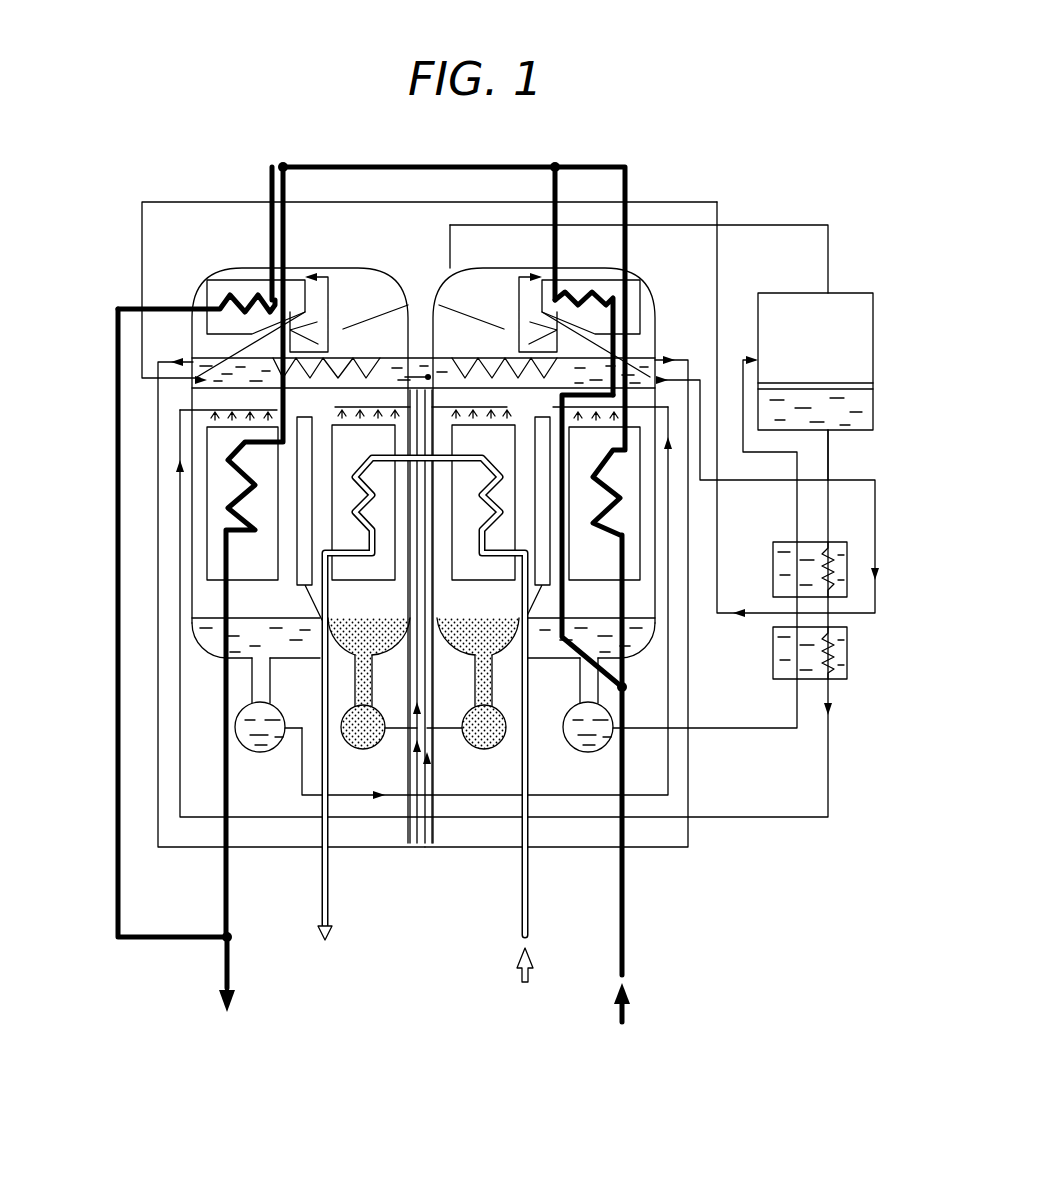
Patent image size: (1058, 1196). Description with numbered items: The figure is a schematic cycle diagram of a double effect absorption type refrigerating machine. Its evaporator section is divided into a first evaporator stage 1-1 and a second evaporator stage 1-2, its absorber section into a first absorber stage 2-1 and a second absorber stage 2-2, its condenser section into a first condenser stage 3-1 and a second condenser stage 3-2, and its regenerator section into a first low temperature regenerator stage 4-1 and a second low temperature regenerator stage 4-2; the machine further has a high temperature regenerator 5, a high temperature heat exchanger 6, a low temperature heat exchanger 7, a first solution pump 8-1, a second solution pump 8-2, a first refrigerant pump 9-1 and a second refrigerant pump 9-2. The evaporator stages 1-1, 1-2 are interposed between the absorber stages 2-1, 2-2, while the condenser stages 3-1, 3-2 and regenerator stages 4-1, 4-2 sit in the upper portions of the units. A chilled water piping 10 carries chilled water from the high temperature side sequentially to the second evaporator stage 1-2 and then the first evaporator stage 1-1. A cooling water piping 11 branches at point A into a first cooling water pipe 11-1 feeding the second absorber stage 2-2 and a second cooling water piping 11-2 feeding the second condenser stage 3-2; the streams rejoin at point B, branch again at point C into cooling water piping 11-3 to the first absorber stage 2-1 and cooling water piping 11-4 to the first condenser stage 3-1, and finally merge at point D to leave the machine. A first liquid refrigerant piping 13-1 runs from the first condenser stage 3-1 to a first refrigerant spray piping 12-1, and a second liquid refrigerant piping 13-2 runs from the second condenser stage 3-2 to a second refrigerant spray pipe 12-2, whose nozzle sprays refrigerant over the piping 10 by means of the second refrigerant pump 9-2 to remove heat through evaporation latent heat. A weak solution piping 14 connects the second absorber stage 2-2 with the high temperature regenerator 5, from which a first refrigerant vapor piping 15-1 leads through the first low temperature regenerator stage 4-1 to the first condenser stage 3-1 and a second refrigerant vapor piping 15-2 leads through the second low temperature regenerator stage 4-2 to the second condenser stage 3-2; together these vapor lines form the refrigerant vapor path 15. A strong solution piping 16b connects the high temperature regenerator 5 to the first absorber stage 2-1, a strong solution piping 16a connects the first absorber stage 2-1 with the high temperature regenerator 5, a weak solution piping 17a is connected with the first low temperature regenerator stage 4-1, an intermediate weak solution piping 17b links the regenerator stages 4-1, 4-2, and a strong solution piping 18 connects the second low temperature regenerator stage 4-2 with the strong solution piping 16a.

The first evaporator stage 1-1 is at (378, 610).
The second evaporator stage 1-2 is at (472, 610).
The first absorber stage 2-1 is at (200, 603).
The second absorber stage 2-2 is at (642, 602).
The first condenser stage 3-1 is at (222, 292).
The second condenser stage 3-2 is at (592, 290).
The first low temperature regenerator stage 4-1 is at (325, 292).
The second low temperature regenerator stage 4-2 is at (505, 292).
The high temperature regenerator 5 is at (860, 293).
The high temperature heat exchanger 6 is at (848, 556).
The low temperature heat exchanger 7 is at (848, 643).
The first solution pump 8-1 is at (258, 752).
The second solution pump 8-2 is at (580, 752).
The first refrigerant pump 9-1 is at (362, 750).
The second refrigerant pump 9-2 is at (480, 750).
The chilled water piping 10 is at (529, 905).
The cooling water piping 11 is at (435, 167).
The first cooling water pipe 11-1 is at (645, 645).
The second cooling water piping 11-2 is at (551, 185).
The cooling water piping 11-3 is at (288, 187).
The cooling water piping 11-4 is at (269, 183).
The first refrigerant spray piping 12-1 is at (353, 360).
The second refrigerant spray pipe 12-2 is at (465, 360).
The first liquid refrigerant piping 13-1 is at (158, 765).
The second liquid refrigerant piping 13-2 is at (690, 770).
The weak solution piping 14 is at (738, 726).
The refrigerant vapor pipe 15 is at (765, 224).
The first refrigerant vapor piping 15-1 is at (452, 228).
The second refrigerant vapor piping 15-2 is at (458, 228).
The strong solution piping 16a is at (765, 819).
The strong solution piping 16b is at (460, 797).
The weak solution piping 17a is at (720, 508).
The intermediate weak solution piping 17b is at (418, 375).
The strong solution piping 18 is at (833, 482).
The branch point A is at (625, 688).
The junction point B is at (556, 165).
The branch point C is at (285, 165).
The junction point D is at (231, 937).